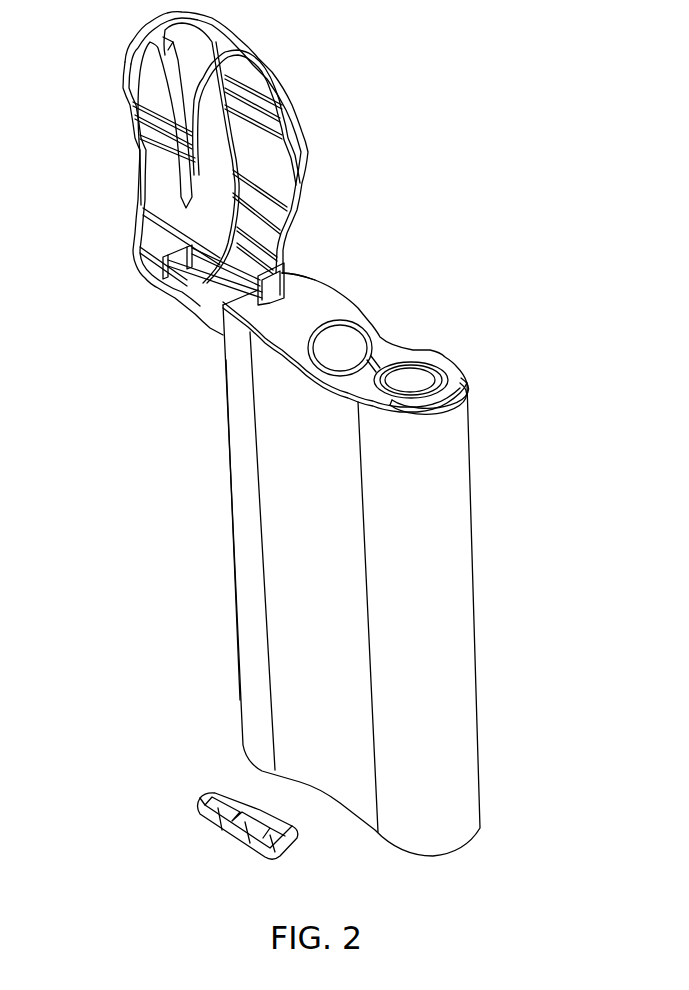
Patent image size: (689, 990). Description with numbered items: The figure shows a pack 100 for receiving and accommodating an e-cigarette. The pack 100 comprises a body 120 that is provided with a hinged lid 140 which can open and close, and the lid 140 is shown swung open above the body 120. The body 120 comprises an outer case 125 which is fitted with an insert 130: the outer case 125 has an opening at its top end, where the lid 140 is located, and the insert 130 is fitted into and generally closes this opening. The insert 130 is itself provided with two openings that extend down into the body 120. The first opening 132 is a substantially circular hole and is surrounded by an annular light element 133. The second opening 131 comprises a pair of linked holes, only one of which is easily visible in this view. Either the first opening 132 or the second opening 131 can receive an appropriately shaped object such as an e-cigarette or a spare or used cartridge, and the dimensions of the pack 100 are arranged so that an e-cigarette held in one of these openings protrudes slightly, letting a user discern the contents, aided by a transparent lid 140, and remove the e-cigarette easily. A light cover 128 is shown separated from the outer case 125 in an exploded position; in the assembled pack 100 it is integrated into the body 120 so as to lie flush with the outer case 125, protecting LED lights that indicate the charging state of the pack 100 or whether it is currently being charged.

The pack 100 is at (152, 605).
The body 120 is at (470, 435).
The outer case 125 is at (232, 530).
The light cover 128 is at (243, 840).
The insert 130 is at (280, 334).
The second opening 131 is at (345, 348).
The first opening 132 is at (410, 384).
The annular light element 133 is at (455, 365).
The lid 140 is at (310, 170).